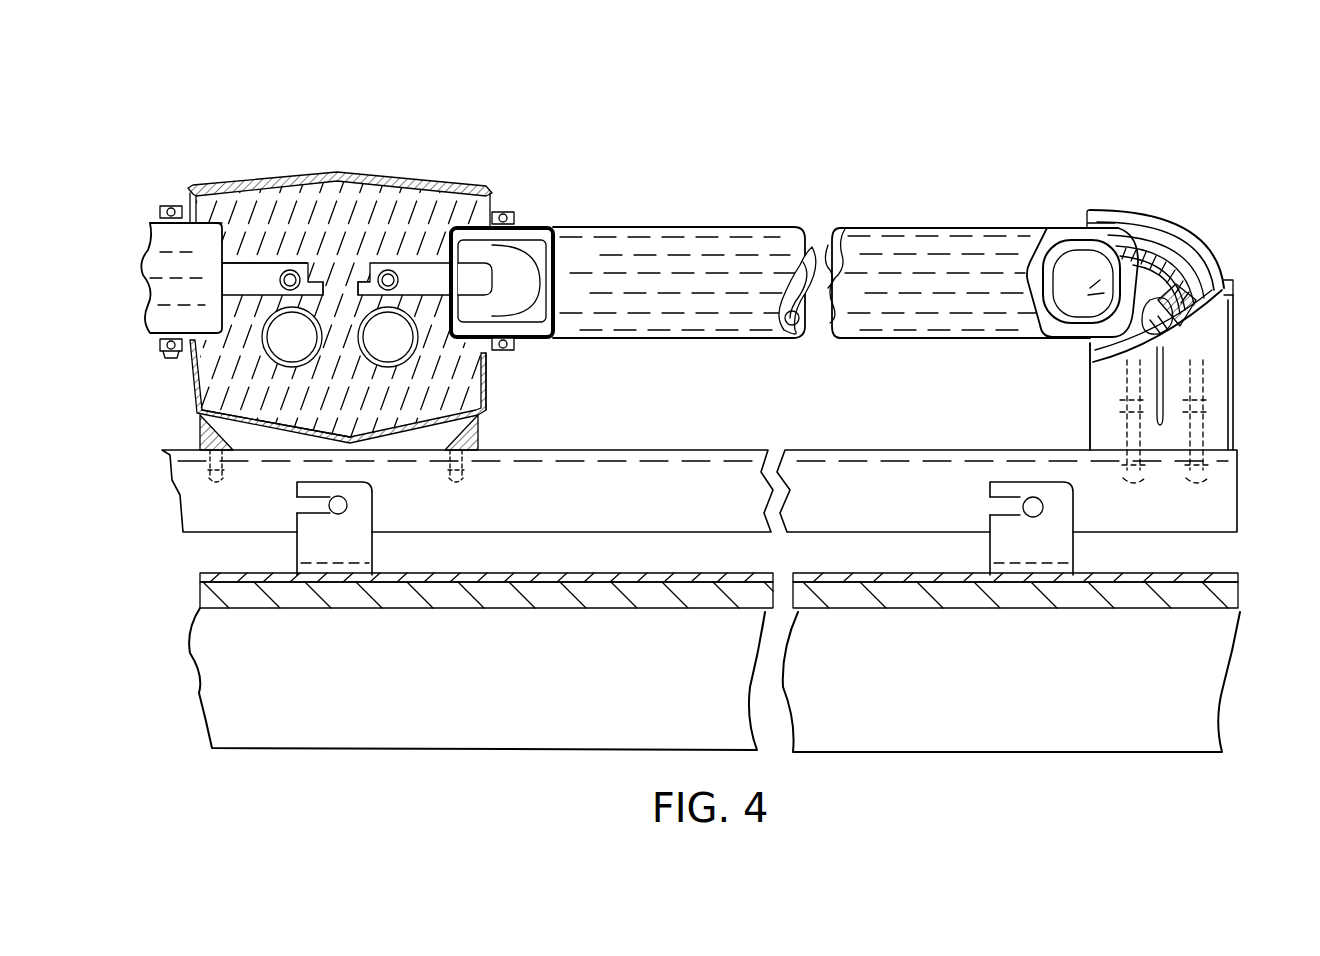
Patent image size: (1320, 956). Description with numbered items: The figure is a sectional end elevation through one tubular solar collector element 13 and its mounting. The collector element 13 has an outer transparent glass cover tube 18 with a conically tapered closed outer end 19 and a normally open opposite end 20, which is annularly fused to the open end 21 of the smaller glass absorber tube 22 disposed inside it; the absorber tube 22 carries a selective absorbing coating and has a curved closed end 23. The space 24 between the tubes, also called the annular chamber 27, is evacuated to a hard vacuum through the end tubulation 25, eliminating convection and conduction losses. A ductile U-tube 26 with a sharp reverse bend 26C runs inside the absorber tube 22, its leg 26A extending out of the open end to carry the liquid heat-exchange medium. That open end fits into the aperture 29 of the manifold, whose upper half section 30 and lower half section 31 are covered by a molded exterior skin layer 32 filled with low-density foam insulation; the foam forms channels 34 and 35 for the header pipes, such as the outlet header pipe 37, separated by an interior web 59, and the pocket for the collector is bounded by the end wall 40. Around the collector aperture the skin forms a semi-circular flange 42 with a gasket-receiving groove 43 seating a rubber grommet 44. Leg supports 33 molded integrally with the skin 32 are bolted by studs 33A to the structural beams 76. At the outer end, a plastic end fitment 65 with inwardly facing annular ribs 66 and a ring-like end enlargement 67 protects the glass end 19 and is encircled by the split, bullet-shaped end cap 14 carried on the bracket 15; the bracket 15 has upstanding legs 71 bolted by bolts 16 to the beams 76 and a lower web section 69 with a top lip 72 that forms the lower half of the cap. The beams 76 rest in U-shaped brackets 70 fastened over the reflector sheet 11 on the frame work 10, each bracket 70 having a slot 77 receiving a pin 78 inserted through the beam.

The frame work 10 is at (212, 597).
The reflector sheet 11 is at (557, 572).
The tubular solar collector element 13 is at (898, 222).
The end cap 14 is at (1222, 245).
The end bracket 15 is at (1243, 358).
The bolts 16 is at (1123, 477).
The outer transparent glass cover tube 18 is at (155, 223).
The conically tapered outer end 19 is at (1130, 245).
The open end of cover tube 20 is at (222, 236).
The open end of absorber tube 21 is at (462, 252).
The glass absorber tube 22 is at (527, 243).
The closed end of absorber tube 23 is at (1115, 225).
The space between tubes 24 is at (140, 262).
The end tubulation 25 is at (1183, 267).
The U-tube 26 is at (236, 280).
The U-tube leg 26A is at (428, 282).
The reverse bend 26C is at (1090, 310).
The annular chamber 27 is at (452, 343).
The aperture 29 is at (488, 398).
The upper half section 30 is at (370, 172).
The lower half section 31 is at (400, 438).
The exterior skin layer 32 is at (297, 180).
The leg supports 33 is at (210, 435).
The studs 33A is at (207, 483).
The channel 34 is at (268, 300).
The channel 35 is at (365, 300).
The outlet header pipe 37 is at (281, 348).
The end wall 40 is at (492, 217).
The semi-circular flange 42 is at (157, 348).
The gasket receiving groove 43 is at (168, 353).
The rubber grommet 44 is at (168, 206).
The interior web 59 is at (337, 287).
The end fitment 65 is at (1167, 320).
The annular ribs 66 is at (1157, 307).
The ring-like end enlargement 67 is at (1102, 213).
The lower web section 69 is at (1163, 407).
The U-shaped bracket 70 is at (350, 545).
The upstanding legs 71 is at (1100, 397).
The top lip 72 is at (1228, 290).
The cross beams 76 is at (892, 467).
The slot 77 is at (300, 493).
The pin 78 is at (347, 503).